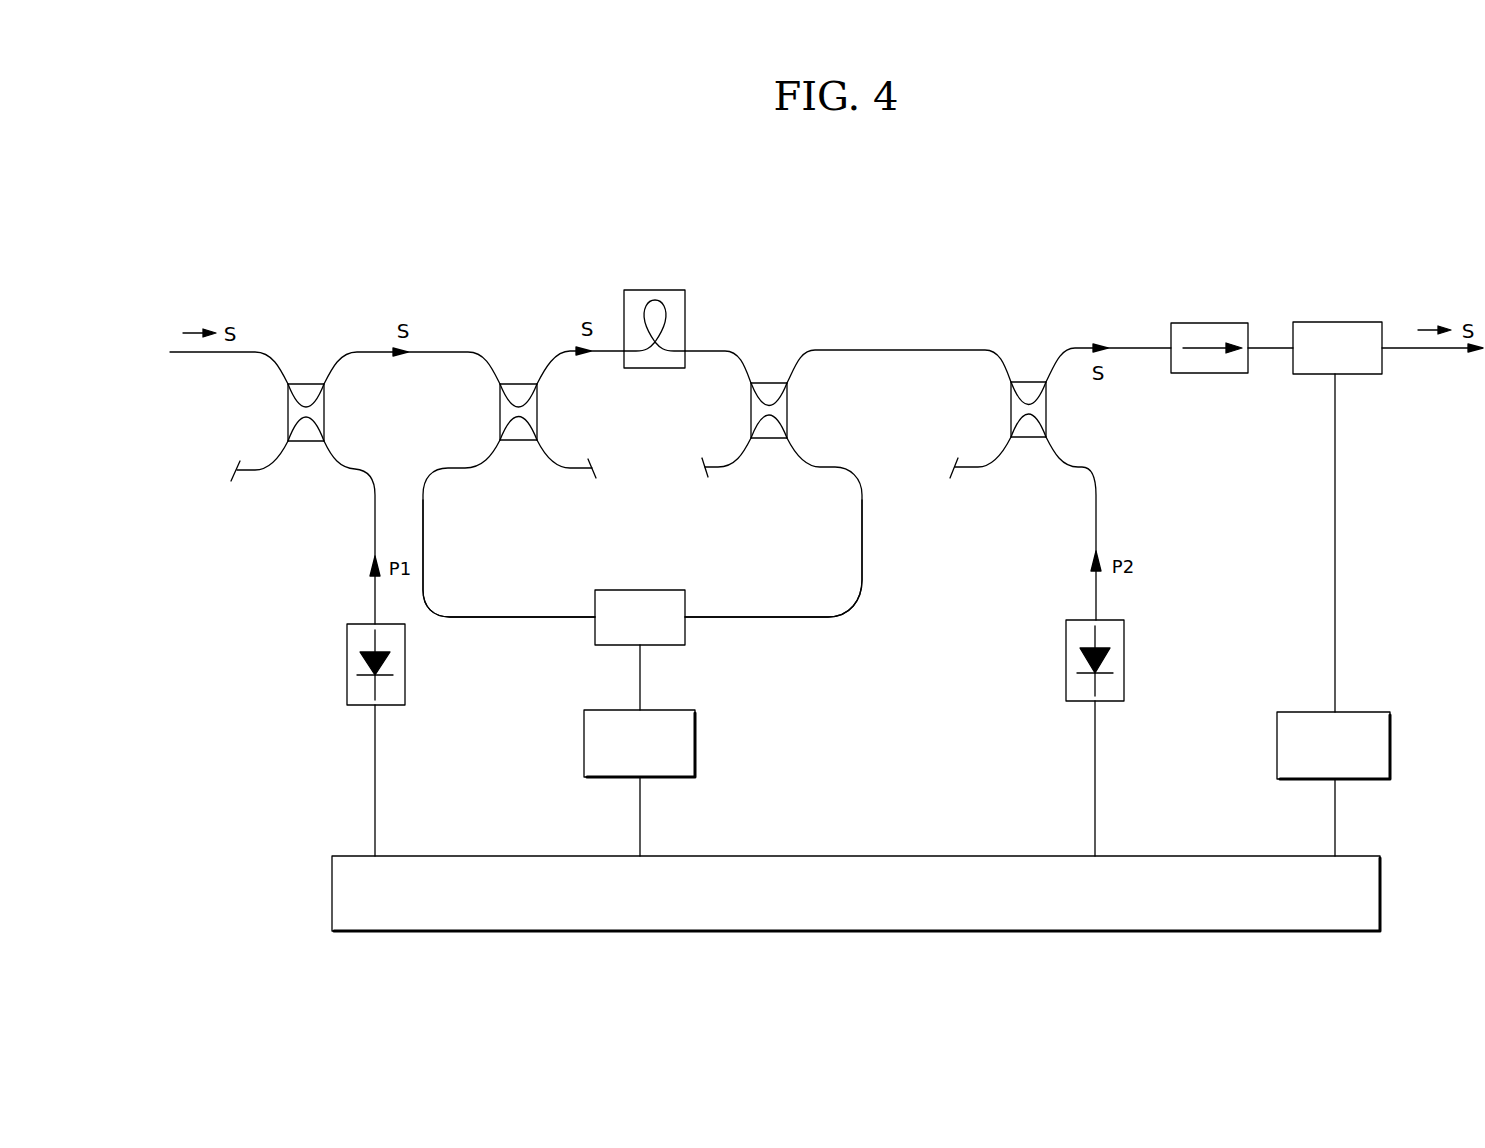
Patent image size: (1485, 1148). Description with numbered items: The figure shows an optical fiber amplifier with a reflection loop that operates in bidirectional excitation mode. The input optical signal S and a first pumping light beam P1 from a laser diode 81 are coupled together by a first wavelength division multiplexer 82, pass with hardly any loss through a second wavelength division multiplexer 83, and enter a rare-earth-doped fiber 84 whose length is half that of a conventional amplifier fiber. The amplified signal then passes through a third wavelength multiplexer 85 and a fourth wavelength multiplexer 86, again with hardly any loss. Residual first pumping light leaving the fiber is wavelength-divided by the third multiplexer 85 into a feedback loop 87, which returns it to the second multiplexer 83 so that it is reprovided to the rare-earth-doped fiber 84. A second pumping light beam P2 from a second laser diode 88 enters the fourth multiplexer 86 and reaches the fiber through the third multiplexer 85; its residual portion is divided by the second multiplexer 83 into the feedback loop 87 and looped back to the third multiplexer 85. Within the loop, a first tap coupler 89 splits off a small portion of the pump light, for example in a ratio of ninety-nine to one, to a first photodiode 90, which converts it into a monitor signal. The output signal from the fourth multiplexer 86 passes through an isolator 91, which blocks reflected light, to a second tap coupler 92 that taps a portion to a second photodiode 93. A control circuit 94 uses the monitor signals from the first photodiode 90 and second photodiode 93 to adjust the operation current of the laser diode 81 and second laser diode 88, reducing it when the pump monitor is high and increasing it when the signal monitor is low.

The laser diode 81 is at (347, 660).
The first wavelength division multiplexer 82 is at (305, 383).
The second wavelength division multiplexer 83 is at (516, 383).
The rare-earth-doped fiber 84 is at (656, 290).
The third wavelength multiplexer 85 is at (763, 383).
The fourth wavelength multiplexer 86 is at (1027, 382).
The feedback loop 87 is at (767, 617).
The second laser diode 88 is at (1066, 661).
The first tap coupler 89 is at (640, 590).
The first photodiode 90 is at (584, 737).
The isolator 91 is at (1210, 323).
The second tap coupler 92 is at (1335, 322).
The second photodiode 93 is at (1277, 741).
The control circuit 94 is at (864, 856).